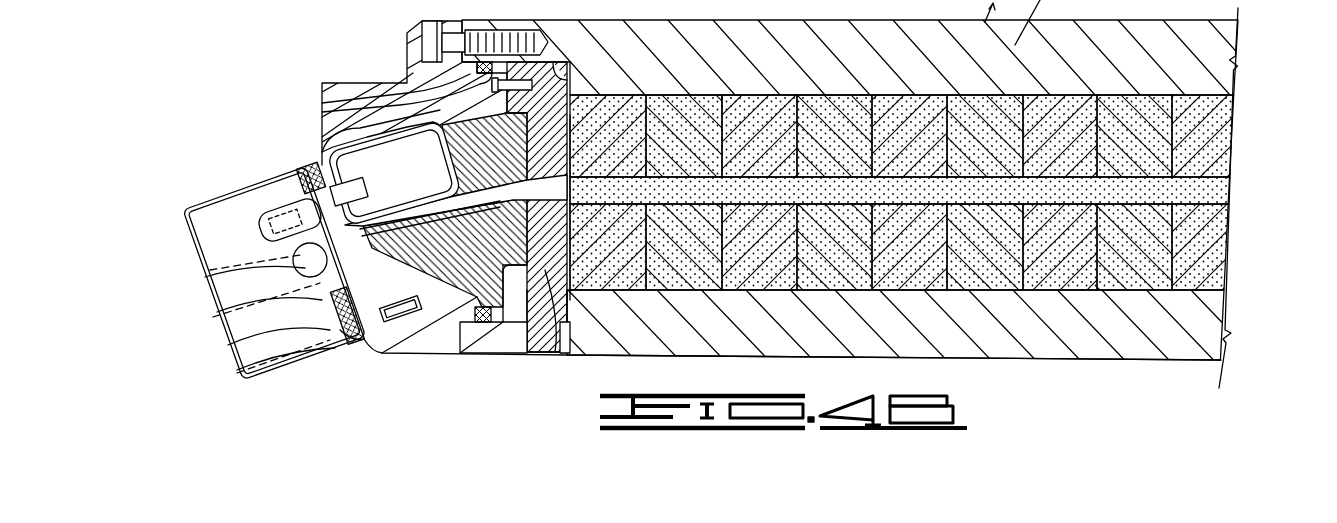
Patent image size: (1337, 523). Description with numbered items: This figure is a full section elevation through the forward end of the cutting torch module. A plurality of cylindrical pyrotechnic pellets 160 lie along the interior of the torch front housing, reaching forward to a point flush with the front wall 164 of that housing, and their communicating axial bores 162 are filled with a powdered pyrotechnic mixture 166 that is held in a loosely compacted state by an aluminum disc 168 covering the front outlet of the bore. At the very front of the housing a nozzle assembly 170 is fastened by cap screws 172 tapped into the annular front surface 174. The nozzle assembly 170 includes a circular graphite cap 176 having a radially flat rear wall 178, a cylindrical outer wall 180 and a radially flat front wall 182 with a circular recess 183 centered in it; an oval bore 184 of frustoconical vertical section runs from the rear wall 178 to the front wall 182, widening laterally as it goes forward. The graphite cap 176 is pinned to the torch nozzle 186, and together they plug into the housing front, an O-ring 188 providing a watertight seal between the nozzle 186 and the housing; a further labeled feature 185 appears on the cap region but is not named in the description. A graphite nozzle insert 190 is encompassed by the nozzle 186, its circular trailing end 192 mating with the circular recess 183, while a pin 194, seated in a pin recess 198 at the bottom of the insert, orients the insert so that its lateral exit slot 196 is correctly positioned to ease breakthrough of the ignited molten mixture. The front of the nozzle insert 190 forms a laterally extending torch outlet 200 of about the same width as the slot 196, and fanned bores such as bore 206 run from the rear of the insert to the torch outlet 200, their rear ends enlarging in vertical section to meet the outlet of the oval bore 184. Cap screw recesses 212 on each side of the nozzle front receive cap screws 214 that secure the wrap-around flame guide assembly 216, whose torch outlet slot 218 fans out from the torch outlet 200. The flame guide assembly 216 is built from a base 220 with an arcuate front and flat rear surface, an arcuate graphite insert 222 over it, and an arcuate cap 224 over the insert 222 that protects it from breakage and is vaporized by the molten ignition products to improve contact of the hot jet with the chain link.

The cylindrical pyrotechnic pellets 160 is at (1202, 133).
The communicating axial bores 162 is at (1205, 188).
The powdered pyrotechnic mixture 166 is at (1140, 205).
The front wall of front housing 164 is at (560, 96).
The aluminum disc 168 is at (558, 237).
The nozzle assembly 170 is at (392, 65).
The cap screws 172 is at (449, 32).
The annular front surface 174 is at (453, 343).
The circular graphite cap 176 is at (560, 150).
The rear wall 178 is at (640, 357).
The cylindrical outer wall 180 is at (575, 320).
The front wall 182 is at (498, 308).
The circular recess 183 is at (365, 92).
The oval bore 184 is at (565, 185).
The top plate 185 is at (400, 82).
The torch nozzle 186 is at (365, 118).
The O-ring 188 is at (483, 323).
The graphite nozzle insert 190 is at (355, 350).
The circular trailing end 192 is at (530, 322).
The pin 194 is at (417, 315).
The lateral exit slot 196 is at (250, 312).
The pin recess 198 is at (408, 318).
The torch outlet 200 is at (236, 339).
The fanned bore 206 is at (242, 361).
The cap screw recesses 212 is at (400, 160).
The cap screws 214 is at (283, 190).
The wrap-around flame guide assembly 216 is at (168, 238).
The torch outlet slot 218 is at (212, 290).
The base 220 is at (310, 167).
The arcuate graphite insert 222 is at (330, 352).
The arcuate cap 224 is at (296, 247).